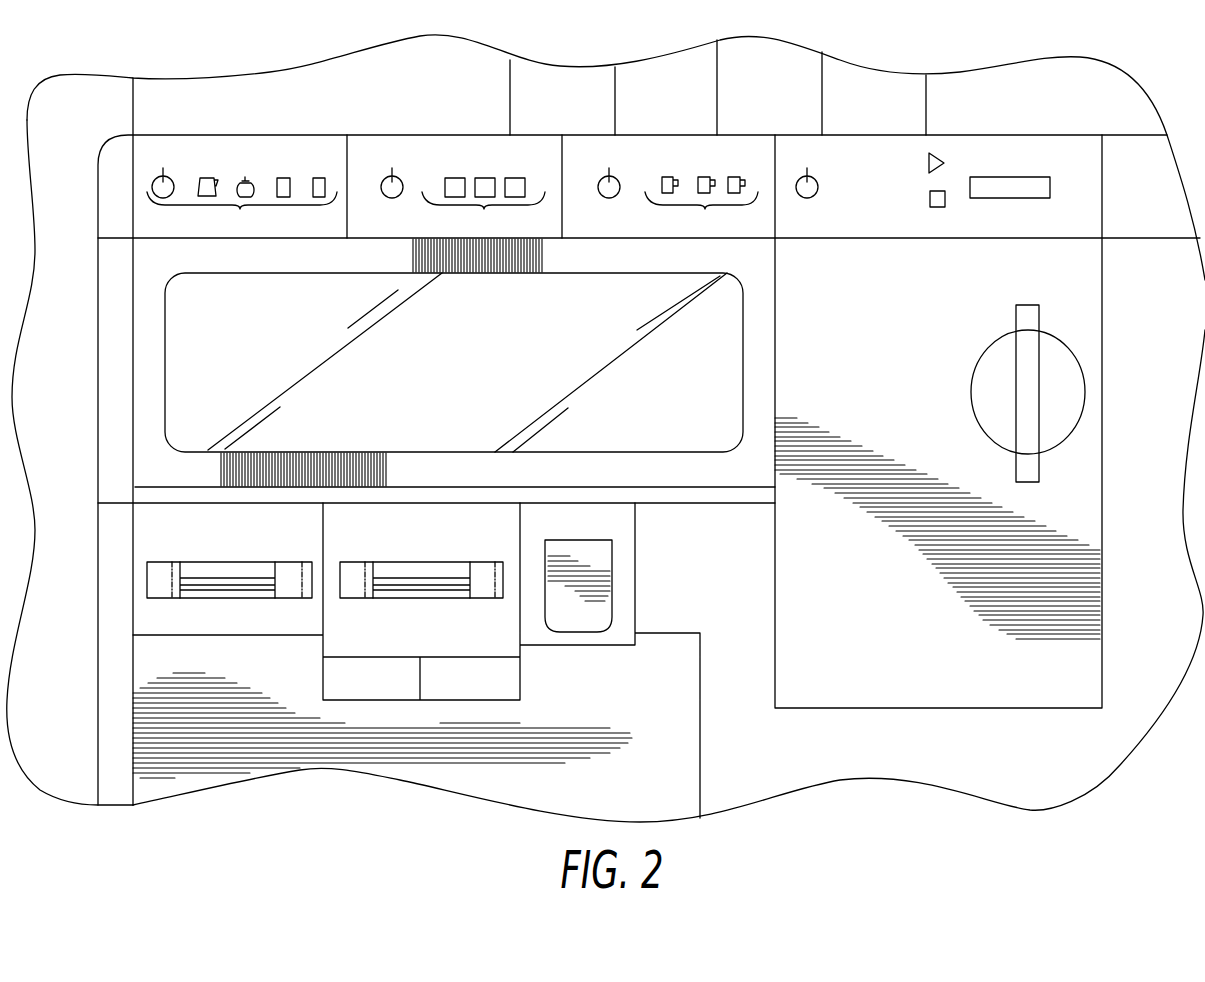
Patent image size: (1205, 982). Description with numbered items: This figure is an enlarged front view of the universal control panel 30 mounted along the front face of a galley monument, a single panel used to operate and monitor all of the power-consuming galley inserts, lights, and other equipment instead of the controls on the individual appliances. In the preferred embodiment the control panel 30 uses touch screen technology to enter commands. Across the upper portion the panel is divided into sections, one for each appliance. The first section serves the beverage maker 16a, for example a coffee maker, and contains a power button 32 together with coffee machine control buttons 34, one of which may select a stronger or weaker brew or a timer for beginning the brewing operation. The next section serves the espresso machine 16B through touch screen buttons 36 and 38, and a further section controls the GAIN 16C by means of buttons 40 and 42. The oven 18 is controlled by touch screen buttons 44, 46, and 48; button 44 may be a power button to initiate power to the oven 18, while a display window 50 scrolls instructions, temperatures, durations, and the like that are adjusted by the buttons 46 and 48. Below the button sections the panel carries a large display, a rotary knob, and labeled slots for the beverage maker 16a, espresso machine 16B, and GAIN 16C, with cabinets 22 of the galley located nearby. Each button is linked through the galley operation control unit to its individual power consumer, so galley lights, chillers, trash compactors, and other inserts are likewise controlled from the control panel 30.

The beverage maker 16a is at (247, 545).
The espresso machine 16B is at (397, 545).
The GAIN 16C is at (622, 563).
The oven 18 is at (1086, 270).
The cabinets 22 is at (742, 258).
The universal control panel 30 is at (265, 143).
The power button 32 is at (157, 180).
The coffee machine control buttons 34 is at (242, 210).
The touch screen button 36 is at (384, 182).
The touch screen buttons 38 is at (483, 210).
The button 40 is at (602, 182).
The buttons 42 is at (701, 210).
The button 44 is at (807, 198).
The button 46 is at (927, 162).
The button 48 is at (928, 199).
The display window 50 is at (1015, 198).